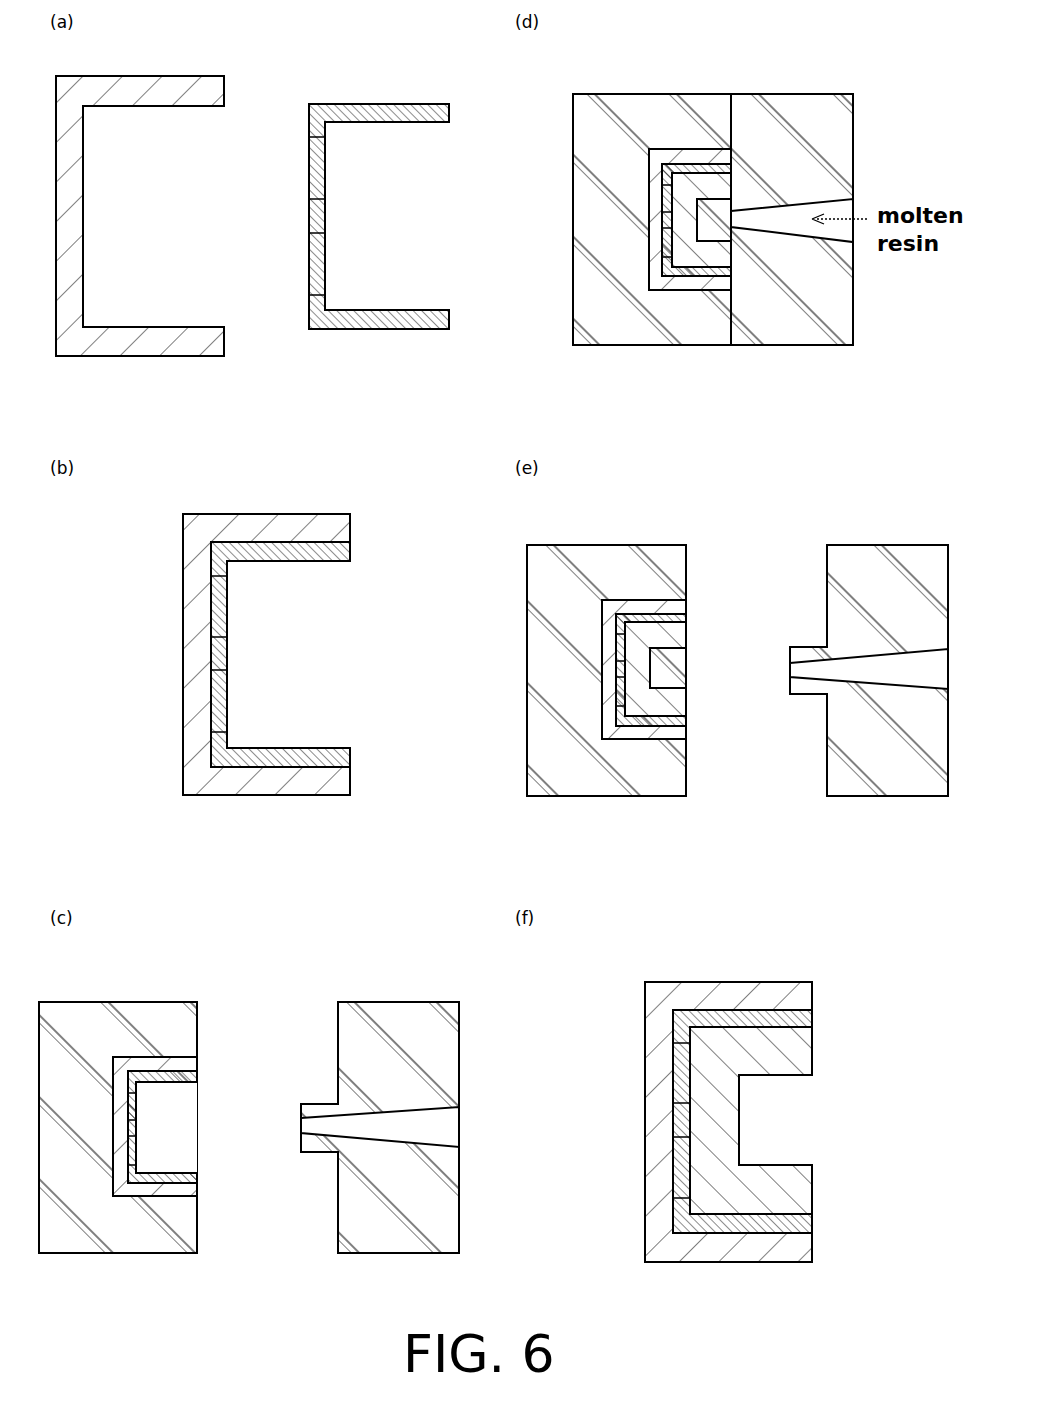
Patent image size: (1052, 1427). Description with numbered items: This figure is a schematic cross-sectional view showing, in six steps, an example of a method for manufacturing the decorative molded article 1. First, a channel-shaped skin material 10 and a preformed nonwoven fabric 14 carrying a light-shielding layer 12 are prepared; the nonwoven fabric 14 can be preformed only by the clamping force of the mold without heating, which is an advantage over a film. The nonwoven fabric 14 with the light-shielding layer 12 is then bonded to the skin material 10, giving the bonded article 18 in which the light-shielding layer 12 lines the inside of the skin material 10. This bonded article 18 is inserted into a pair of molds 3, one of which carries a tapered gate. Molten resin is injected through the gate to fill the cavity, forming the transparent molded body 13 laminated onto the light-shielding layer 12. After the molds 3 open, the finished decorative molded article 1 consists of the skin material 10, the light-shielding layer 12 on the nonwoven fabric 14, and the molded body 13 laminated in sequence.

The decorative molded article 1 is at (785, 1085).
The mold 3 is at (127, 1002).
The skin material 10 is at (160, 70).
The light-shielding layer 12 is at (407, 122).
The molded body 13 is at (812, 1059).
The nonwoven fabric 14 is at (379, 181).
The bonded article 18 is at (288, 508).